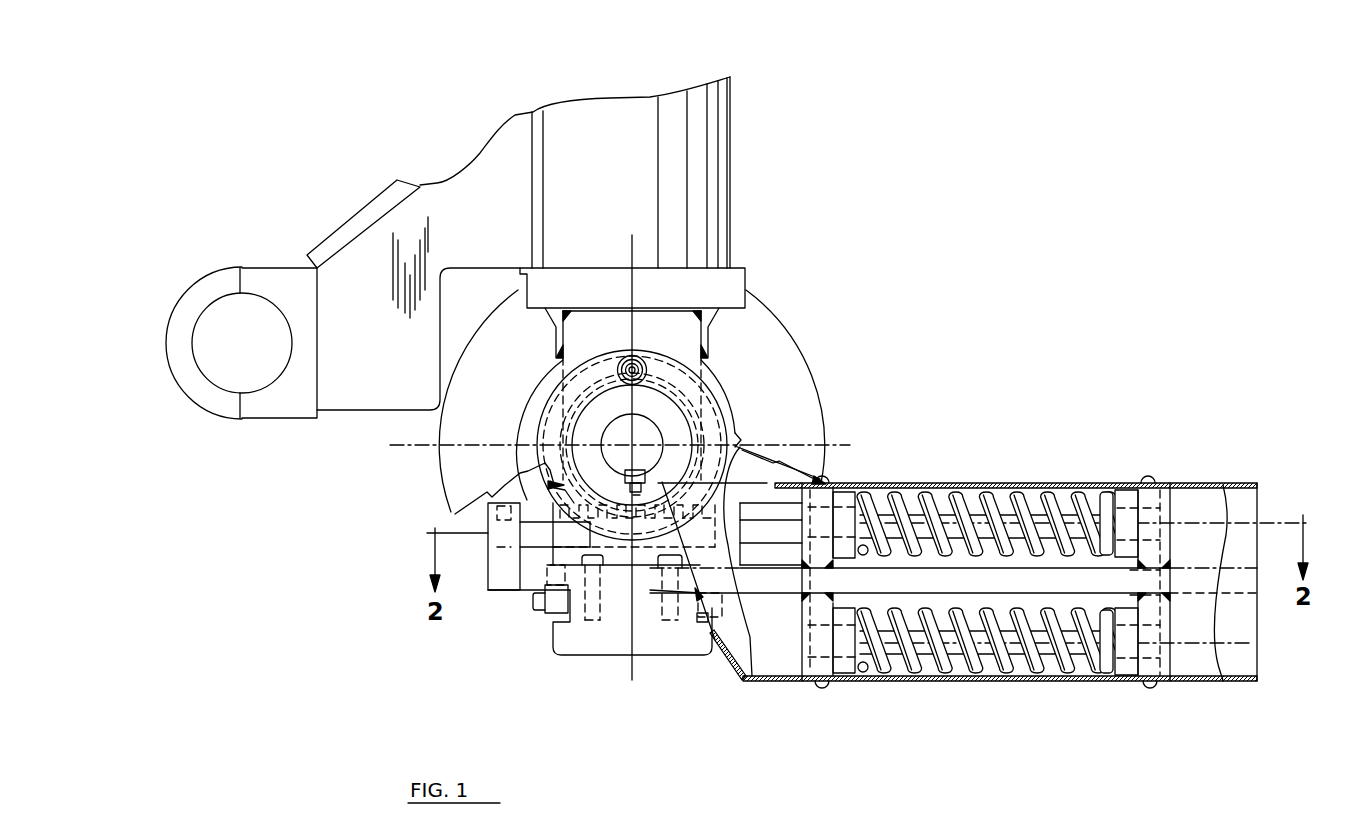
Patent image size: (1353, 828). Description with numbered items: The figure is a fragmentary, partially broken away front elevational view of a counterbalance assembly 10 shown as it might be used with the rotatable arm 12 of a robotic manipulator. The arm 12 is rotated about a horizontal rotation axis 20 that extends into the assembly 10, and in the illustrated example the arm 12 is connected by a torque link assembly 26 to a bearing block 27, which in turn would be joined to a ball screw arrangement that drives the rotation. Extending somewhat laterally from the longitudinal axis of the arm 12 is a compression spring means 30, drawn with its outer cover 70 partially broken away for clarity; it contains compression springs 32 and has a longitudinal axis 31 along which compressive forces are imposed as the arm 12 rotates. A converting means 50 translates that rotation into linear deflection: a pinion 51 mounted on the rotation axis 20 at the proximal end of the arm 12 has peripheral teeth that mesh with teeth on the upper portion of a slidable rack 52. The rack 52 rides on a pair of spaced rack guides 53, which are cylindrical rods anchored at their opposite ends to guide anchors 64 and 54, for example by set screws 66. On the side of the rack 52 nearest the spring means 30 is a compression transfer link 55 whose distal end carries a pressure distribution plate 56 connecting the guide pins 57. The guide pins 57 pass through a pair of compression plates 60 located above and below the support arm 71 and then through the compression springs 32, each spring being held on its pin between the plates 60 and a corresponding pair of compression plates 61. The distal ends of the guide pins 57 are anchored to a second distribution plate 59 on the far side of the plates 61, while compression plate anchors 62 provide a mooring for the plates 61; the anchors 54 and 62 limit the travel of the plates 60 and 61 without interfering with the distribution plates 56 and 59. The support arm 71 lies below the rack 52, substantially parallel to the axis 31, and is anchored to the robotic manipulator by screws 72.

The counterbalance assembly 10 is at (955, 298).
The rotatable arm 12 is at (720, 170).
The rotation axis 20 is at (634, 444).
The torque link assembly 26 is at (372, 260).
The bearing block 27 is at (232, 407).
The compression spring means 30 is at (1076, 476).
The longitudinal axis 31 is at (482, 535).
The compression springs 32 is at (983, 500).
The converting means 50 is at (560, 470).
The pinion 51 is at (540, 450).
The rack 52 is at (555, 487).
The rack guides 53 is at (537, 537).
The guide anchor 54 is at (840, 486).
The compression transfer link 55 is at (783, 510).
The pressure distribution plate 56 is at (845, 607).
The guide pins 57 is at (923, 495).
The second distribution plate 59 is at (1150, 552).
The compression plates 60 is at (848, 500).
The compression plates 61 is at (1127, 500).
The compression plate anchors 62 is at (1170, 513).
The guide anchor 64 is at (493, 558).
The set screws 66 is at (434, 530).
The outer cover 70 is at (1227, 672).
The support arm 71 is at (760, 590).
The screws 72 is at (590, 617).